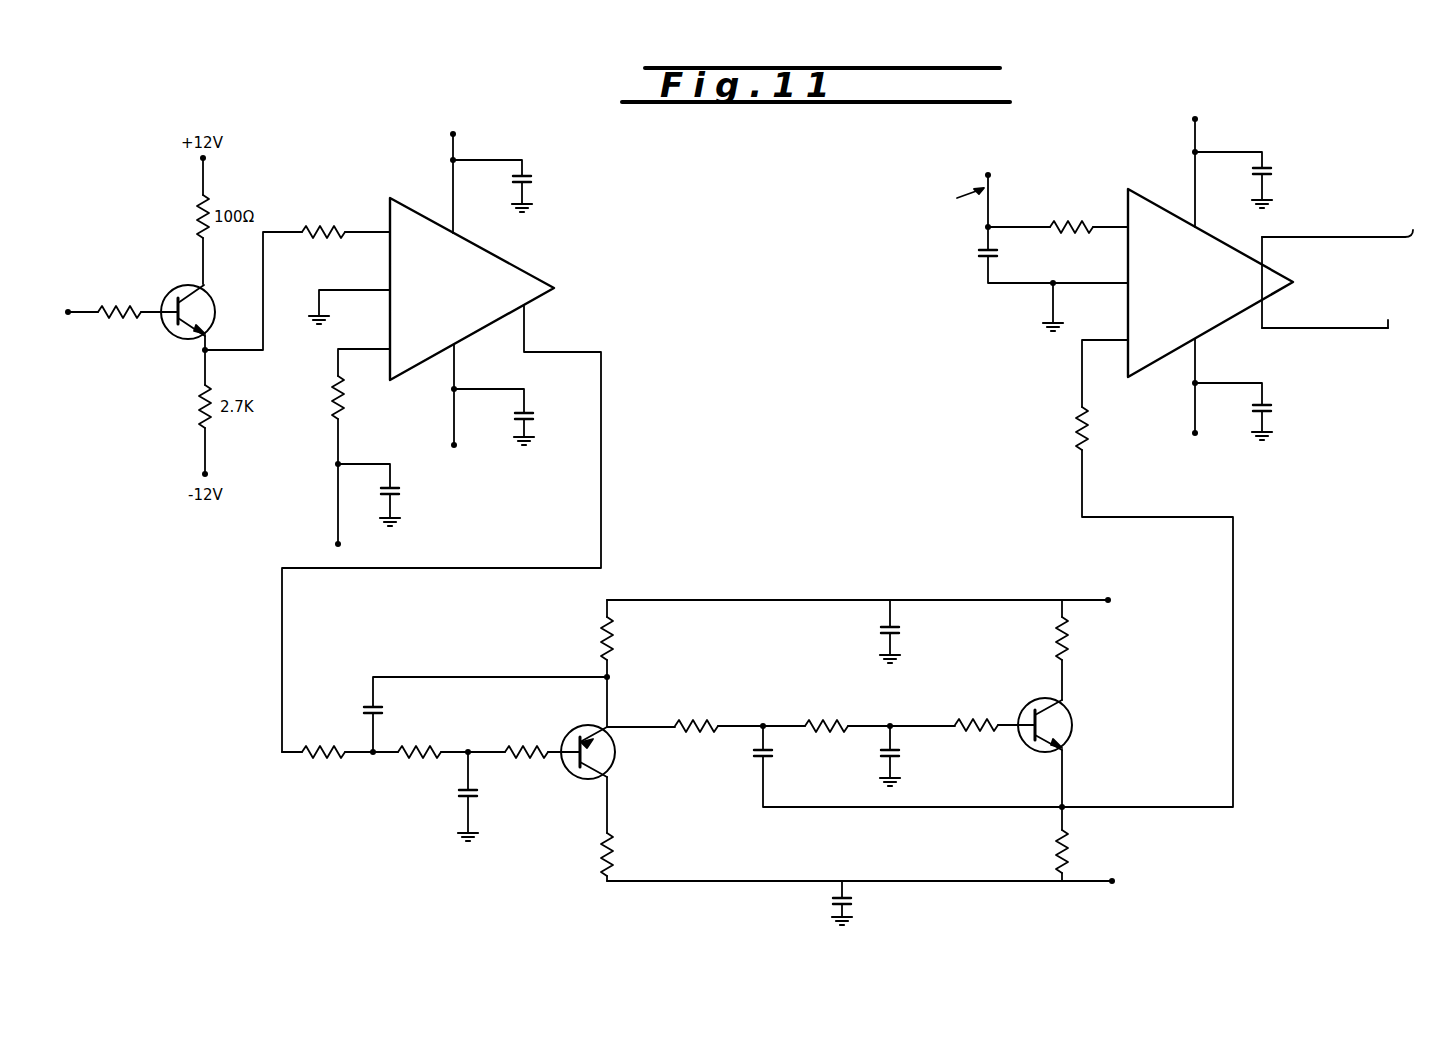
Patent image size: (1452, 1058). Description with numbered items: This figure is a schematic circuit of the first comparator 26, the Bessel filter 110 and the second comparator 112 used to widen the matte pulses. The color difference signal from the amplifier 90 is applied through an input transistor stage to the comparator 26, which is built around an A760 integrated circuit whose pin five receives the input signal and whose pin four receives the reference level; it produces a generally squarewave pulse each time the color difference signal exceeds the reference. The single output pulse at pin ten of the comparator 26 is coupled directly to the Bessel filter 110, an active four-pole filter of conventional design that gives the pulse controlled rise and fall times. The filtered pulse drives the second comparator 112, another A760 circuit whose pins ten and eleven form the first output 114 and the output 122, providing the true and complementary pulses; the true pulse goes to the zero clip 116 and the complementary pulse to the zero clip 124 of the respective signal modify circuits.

The amplifier 90 is at (68, 318).
The comparator 26 is at (466, 543).
The Bessel filter 110 is at (708, 914).
The second comparator 112 is at (1265, 485).
The output 122 is at (1298, 240).
The zero clip 124 is at (1375, 231).
The first output 114 is at (1300, 324).
The zero clip 116 is at (1373, 374).